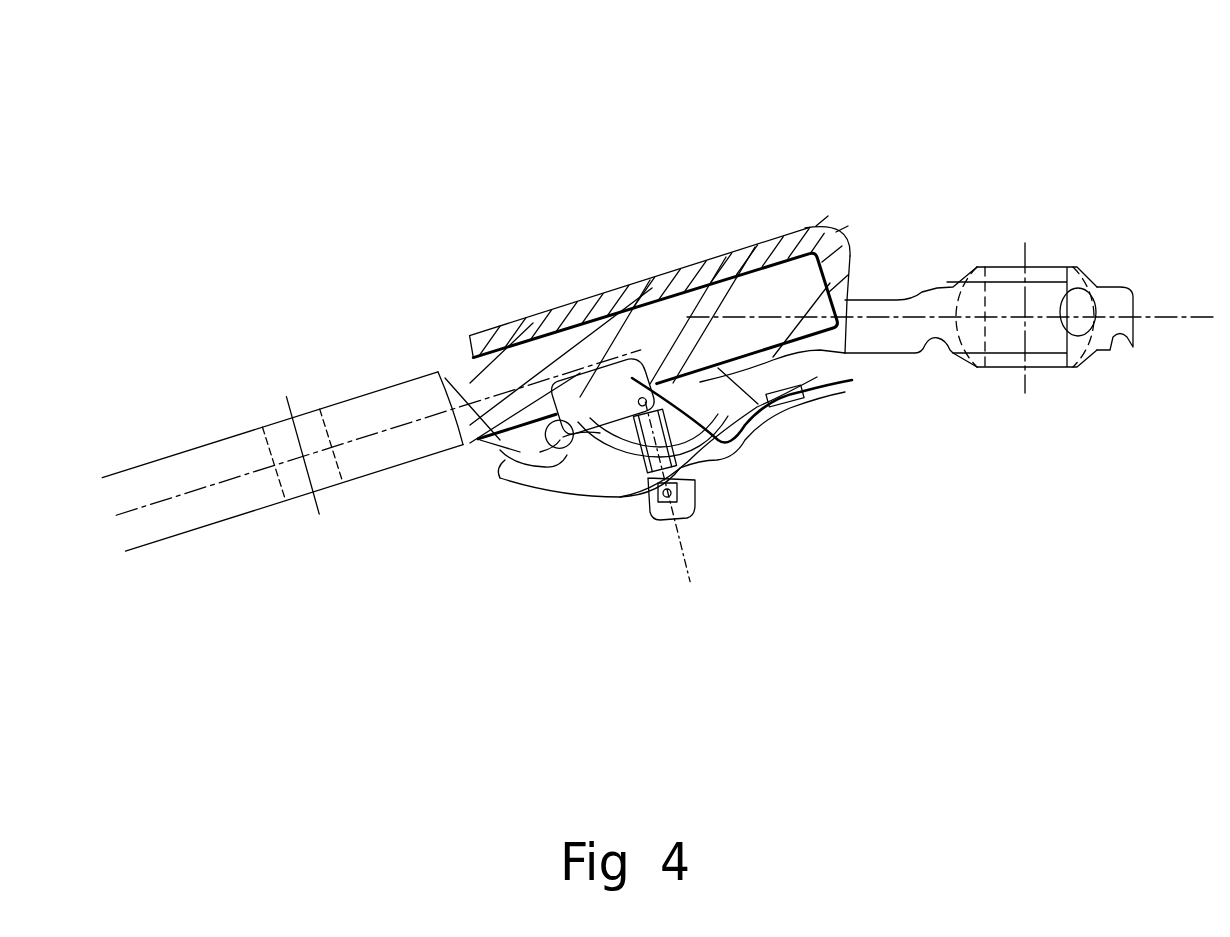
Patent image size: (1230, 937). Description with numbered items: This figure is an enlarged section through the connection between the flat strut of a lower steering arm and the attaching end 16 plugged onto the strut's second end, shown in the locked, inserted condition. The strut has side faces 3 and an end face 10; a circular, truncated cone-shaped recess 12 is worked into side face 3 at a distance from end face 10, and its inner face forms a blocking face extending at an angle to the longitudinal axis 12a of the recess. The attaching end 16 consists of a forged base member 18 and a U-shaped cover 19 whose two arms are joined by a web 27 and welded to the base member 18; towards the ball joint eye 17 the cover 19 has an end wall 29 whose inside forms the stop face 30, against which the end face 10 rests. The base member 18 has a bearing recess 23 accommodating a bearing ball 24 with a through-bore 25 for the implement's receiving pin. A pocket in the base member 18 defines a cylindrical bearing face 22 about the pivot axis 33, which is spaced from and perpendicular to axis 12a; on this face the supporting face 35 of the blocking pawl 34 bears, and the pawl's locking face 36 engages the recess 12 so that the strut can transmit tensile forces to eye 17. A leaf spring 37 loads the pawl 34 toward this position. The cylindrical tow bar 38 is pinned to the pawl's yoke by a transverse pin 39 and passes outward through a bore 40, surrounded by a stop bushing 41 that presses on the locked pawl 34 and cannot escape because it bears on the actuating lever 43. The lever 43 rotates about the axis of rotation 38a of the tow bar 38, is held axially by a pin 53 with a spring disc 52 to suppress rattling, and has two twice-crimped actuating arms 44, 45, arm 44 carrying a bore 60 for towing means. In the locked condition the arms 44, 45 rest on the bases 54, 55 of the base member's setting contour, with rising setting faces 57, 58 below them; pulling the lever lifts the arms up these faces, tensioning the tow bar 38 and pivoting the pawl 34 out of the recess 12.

The side face 3 is at (220, 530).
The end face 10 is at (838, 250).
The recess 12 is at (570, 395).
The longitudinal axis 12a is at (573, 292).
The attaching end 16 is at (722, 167).
The ball joint eye 17 is at (1047, 357).
The base member 18 is at (837, 343).
The cover 19 is at (643, 290).
The bearing face 22 is at (478, 368).
The bearing recess 23 is at (1097, 290).
The bearing ball 24 is at (980, 275).
The through-bore 25 is at (1083, 277).
The web 27 is at (686, 278).
The end wall 29 is at (812, 243).
The stop face 30 is at (795, 300).
The pivot axis 33 is at (533, 430).
The blocking pawl 34 is at (610, 410).
The supporting face 35 is at (540, 452).
The locking face 36 is at (688, 313).
The leaf spring 37 is at (738, 433).
The tow bar 38 is at (700, 460).
The axis of rotation 38a is at (675, 515).
The pin 39 is at (625, 478).
The bore 40 is at (655, 455).
The stop bushing 41 is at (643, 410).
The actuating lever 43 is at (718, 458).
The actuating arm 44 is at (755, 417).
The actuating arm 45 is at (563, 437).
The spring disc 52 is at (681, 470).
The pin 53 is at (668, 505).
The base 54 is at (775, 408).
The base 55 is at (548, 462).
The setting face 57 is at (783, 378).
The setting face 58 is at (525, 467).
The bore 60 is at (785, 400).